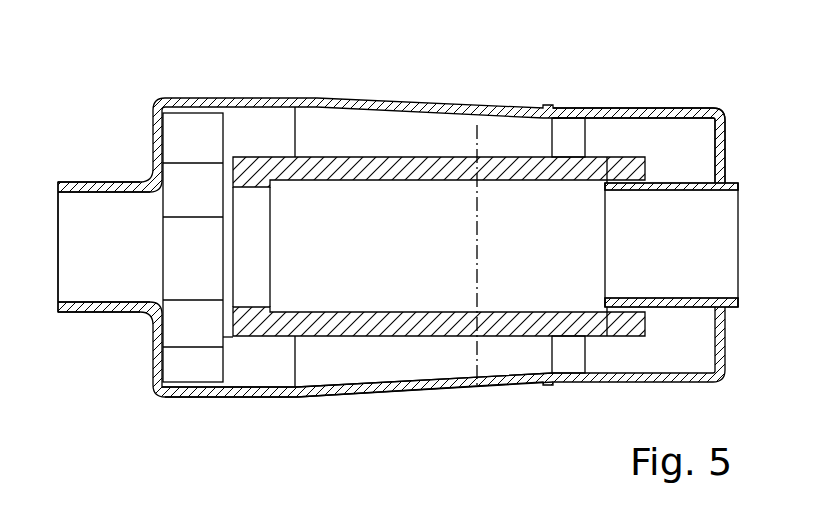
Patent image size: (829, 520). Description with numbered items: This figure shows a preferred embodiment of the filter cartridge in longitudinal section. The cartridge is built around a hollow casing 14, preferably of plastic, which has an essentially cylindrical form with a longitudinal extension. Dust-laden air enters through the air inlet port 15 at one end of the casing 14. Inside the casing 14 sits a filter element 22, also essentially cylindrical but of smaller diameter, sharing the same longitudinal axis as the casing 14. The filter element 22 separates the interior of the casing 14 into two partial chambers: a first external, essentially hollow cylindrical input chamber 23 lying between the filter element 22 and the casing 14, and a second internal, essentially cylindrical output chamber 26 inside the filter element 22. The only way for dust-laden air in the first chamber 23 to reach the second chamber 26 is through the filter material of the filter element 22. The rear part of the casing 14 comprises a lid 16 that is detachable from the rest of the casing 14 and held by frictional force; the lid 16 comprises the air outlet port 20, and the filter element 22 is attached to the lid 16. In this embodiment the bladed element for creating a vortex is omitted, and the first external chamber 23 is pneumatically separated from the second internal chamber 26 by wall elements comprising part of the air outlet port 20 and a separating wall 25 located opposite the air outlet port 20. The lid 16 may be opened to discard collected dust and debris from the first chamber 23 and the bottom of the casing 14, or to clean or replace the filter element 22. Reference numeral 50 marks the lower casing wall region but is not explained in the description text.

The casing 14 is at (356, 100).
The air inlet port 15 is at (83, 193).
The lid 16 is at (647, 109).
The air outlet port 20 is at (672, 191).
The filter element 22 is at (520, 168).
The first external input chamber 23 is at (385, 370).
The separating wall 25 is at (225, 265).
The second internal output chamber 26 is at (410, 241).
The housing bottom wall 50 is at (413, 384).